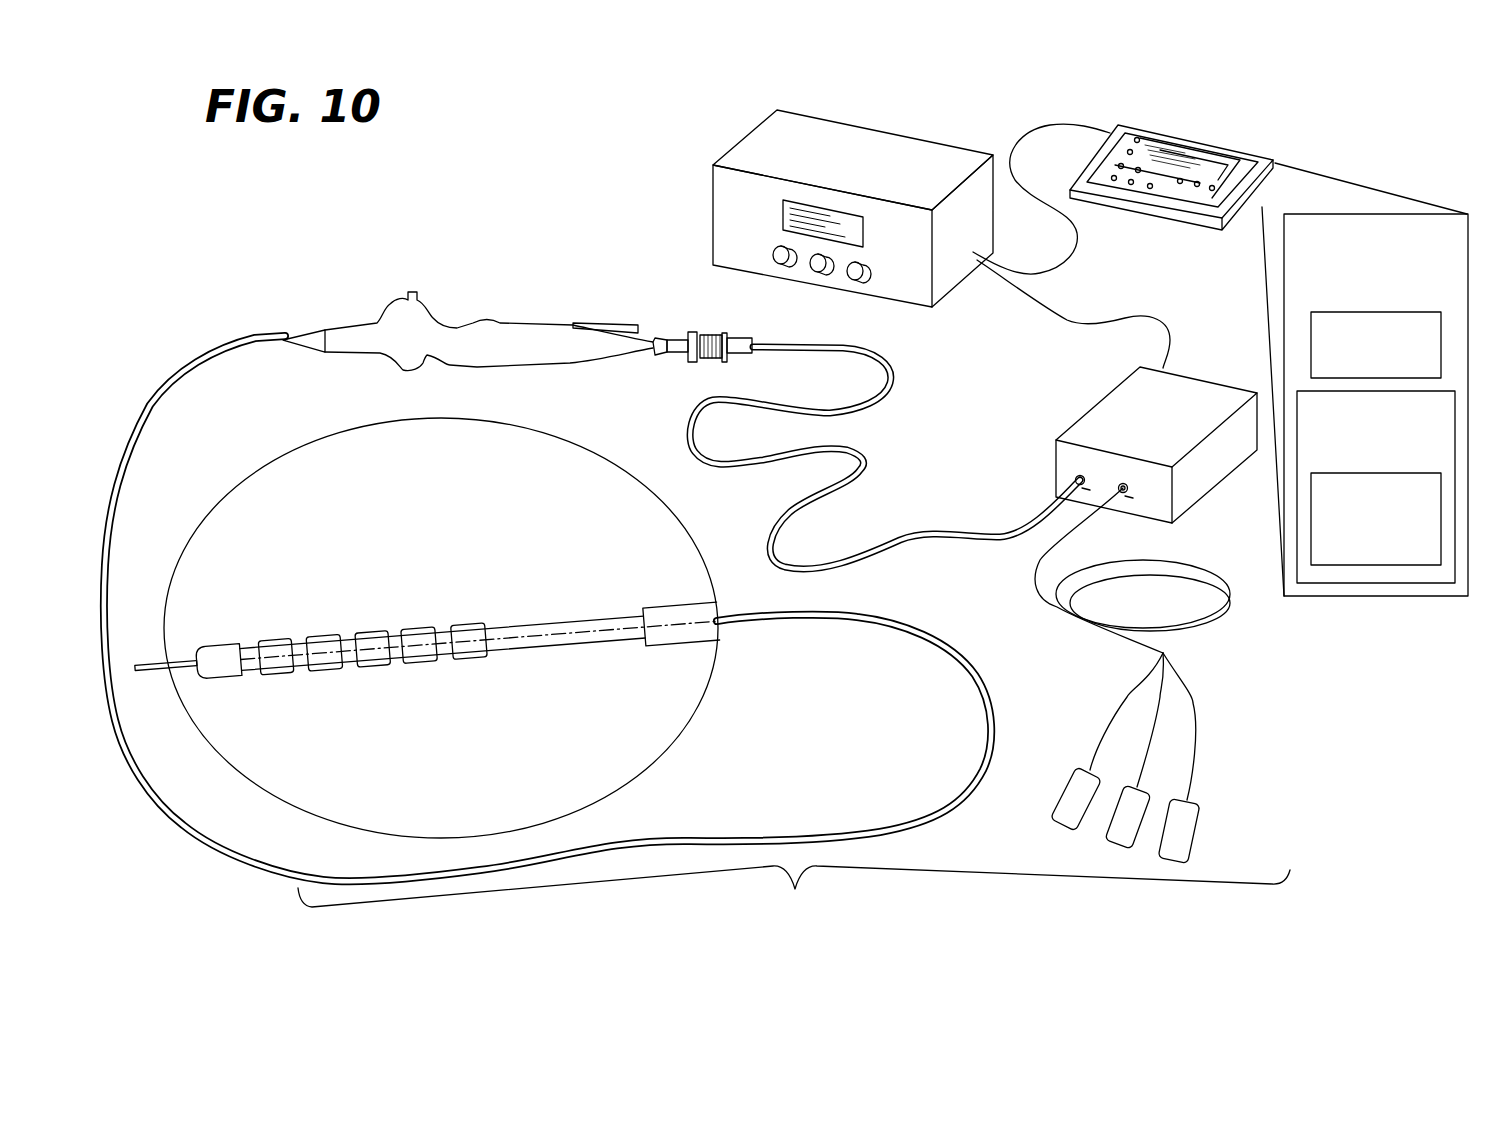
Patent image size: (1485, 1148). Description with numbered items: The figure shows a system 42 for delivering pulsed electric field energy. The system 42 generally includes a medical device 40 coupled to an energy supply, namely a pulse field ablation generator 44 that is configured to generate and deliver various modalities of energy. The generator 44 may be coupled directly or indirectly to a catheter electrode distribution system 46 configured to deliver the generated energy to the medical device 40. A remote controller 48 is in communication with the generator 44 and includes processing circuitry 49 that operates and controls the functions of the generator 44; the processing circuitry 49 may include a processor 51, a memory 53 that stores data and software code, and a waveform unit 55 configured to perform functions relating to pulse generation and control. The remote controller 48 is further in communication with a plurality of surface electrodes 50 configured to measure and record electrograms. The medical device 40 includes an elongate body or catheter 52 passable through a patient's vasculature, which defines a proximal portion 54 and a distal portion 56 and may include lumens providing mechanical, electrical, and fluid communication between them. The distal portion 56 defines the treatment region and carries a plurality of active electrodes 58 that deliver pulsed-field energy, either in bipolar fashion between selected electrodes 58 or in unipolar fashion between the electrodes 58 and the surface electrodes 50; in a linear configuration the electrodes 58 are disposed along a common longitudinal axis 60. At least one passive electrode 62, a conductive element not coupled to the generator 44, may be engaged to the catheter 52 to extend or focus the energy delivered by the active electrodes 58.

The medical device 40 is at (357, 297).
The system 42 is at (350, 386).
The pulse field ablation generator 44 is at (722, 145).
The catheter electrode distribution system 46 is at (1120, 405).
The remote controller 48 is at (1218, 232).
The processing circuitry 49 is at (1376, 405).
The surface electrodes 50 is at (1075, 790).
The processor 51 is at (1376, 487).
The catheter 52 is at (167, 390).
The memory 53 is at (1376, 345).
The proximal portion 54 is at (268, 330).
The waveform unit 55 is at (1376, 519).
The distal portion 56 is at (236, 465).
The active electrodes 58 is at (470, 623).
The common longitudinal axis 60 is at (118, 664).
The passive electrode 62 is at (155, 674).